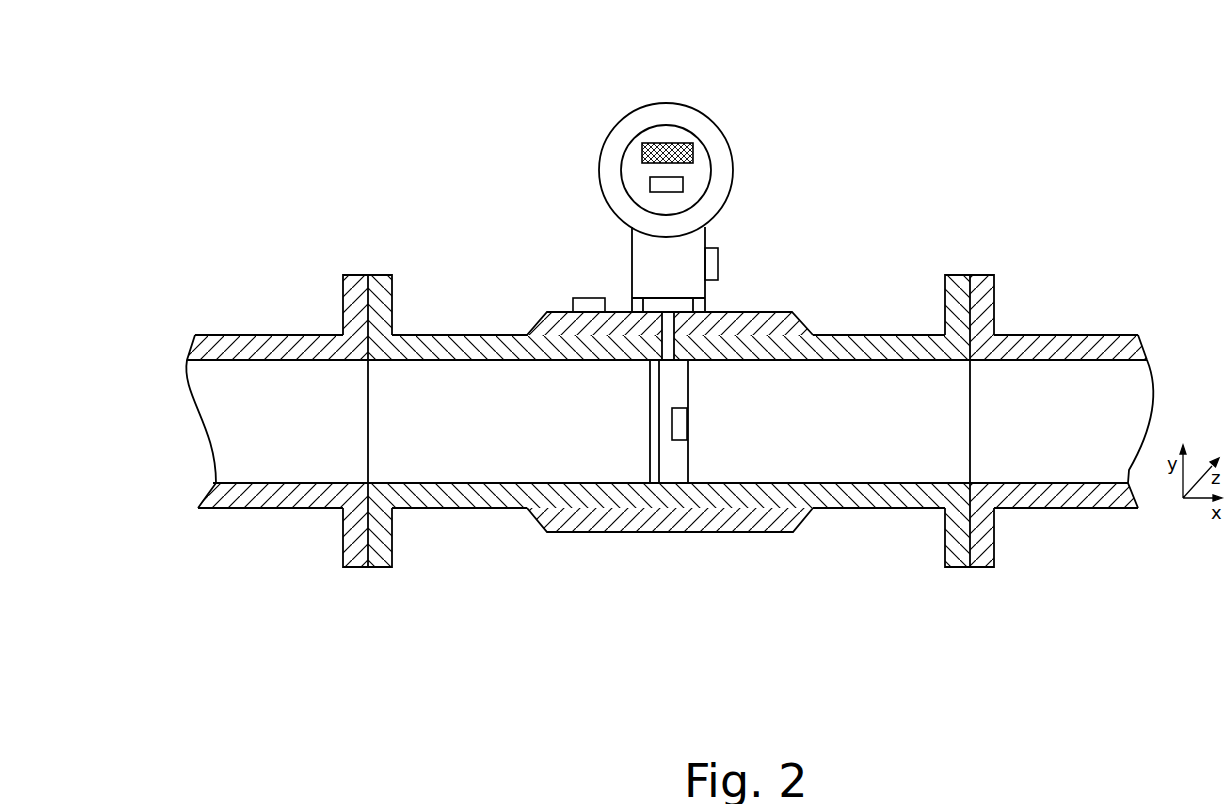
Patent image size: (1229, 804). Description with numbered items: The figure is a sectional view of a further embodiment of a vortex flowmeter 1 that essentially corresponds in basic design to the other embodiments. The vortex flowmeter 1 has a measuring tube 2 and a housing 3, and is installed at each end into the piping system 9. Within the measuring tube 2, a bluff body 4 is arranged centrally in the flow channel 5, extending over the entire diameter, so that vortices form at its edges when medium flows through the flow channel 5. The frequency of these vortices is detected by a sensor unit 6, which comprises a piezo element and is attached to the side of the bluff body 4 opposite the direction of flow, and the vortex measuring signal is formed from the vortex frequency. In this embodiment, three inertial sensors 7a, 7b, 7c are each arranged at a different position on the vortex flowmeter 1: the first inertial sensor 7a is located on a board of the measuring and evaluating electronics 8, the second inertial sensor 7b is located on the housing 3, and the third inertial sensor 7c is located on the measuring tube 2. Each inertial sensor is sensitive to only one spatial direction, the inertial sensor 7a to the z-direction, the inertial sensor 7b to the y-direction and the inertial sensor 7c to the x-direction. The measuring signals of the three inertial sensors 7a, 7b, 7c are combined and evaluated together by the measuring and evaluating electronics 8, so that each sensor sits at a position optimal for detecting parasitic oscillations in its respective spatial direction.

The vortex flowmeter 1 is at (655, 351).
The measuring tube 2 is at (474, 494).
The housing 3 is at (648, 262).
The bluff body 4 is at (655, 465).
The flow channel 5 is at (866, 395).
The sensor unit 6 is at (680, 423).
The first inertial sensor 7a is at (673, 183).
The second inertial sensor 7b is at (716, 263).
The third inertial sensor 7c is at (582, 302).
The measuring and evaluating electronics 8 is at (637, 140).
The piping system 9 is at (245, 518).